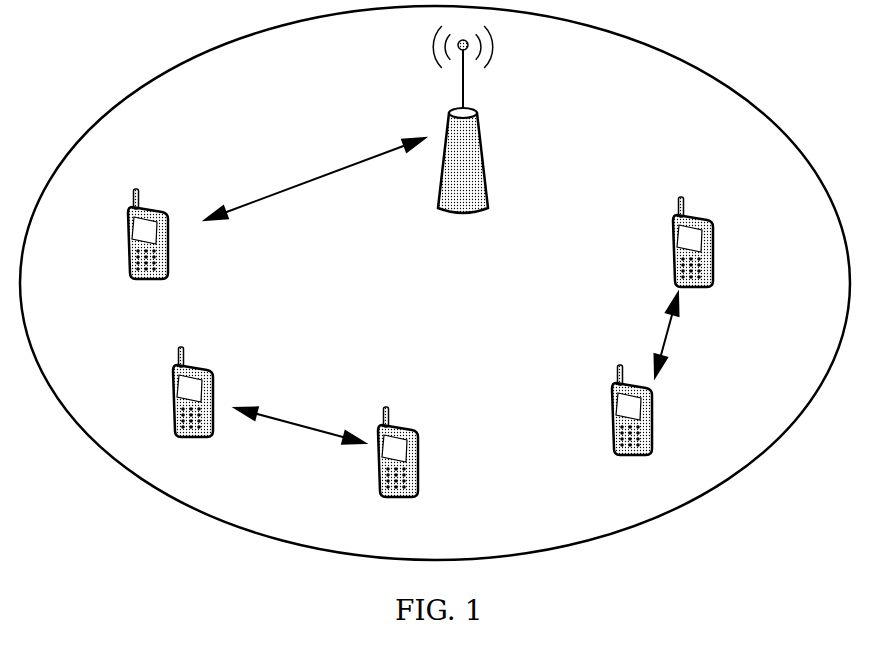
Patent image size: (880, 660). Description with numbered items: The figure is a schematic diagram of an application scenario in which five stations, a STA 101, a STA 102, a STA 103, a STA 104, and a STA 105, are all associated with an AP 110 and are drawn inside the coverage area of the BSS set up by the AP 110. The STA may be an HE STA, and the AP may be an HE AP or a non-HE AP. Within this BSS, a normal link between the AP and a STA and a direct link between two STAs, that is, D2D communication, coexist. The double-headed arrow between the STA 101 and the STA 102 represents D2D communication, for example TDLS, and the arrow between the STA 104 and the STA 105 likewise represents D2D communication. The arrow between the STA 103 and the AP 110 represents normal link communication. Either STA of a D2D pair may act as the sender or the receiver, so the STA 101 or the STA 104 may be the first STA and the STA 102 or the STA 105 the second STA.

The AP 110 is at (467, 142).
The STA 101 is at (218, 414).
The STA 102 is at (404, 474).
The STA 103 is at (151, 257).
The STA 104 is at (595, 433).
The STA 105 is at (749, 242).